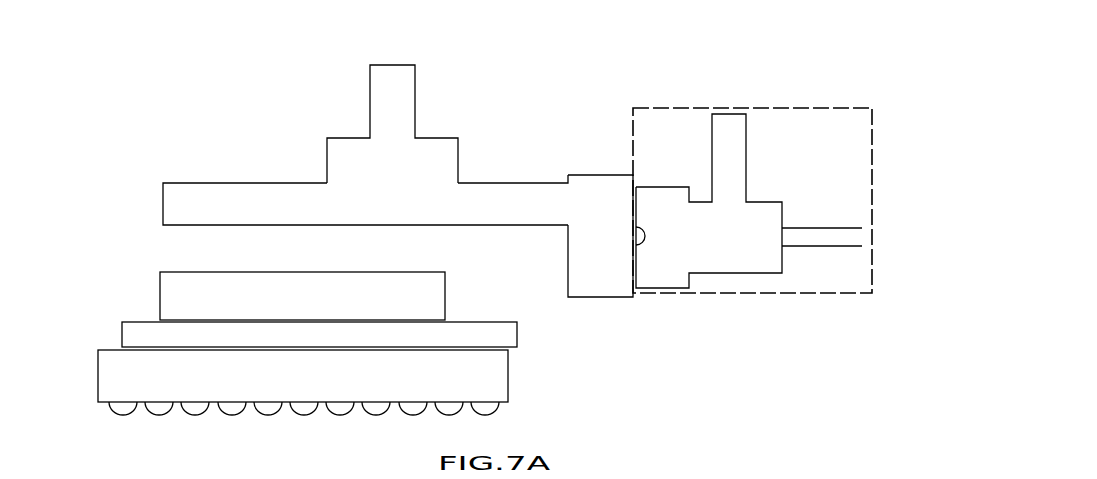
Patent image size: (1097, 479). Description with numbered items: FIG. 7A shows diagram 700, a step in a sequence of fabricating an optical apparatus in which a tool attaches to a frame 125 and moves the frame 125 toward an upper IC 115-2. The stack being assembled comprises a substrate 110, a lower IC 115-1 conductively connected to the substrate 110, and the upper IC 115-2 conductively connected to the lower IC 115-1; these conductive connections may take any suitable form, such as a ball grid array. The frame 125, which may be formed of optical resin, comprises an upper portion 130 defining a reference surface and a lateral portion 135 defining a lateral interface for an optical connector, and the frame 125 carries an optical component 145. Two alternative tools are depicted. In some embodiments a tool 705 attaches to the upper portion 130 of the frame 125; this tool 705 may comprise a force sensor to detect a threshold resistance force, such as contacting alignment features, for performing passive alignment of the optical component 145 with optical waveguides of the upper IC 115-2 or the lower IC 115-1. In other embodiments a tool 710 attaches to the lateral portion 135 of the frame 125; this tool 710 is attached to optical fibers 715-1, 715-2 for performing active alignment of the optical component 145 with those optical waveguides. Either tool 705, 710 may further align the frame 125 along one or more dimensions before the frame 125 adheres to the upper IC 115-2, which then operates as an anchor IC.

The substrate 110 is at (158, 370).
The lower IC 115-1 is at (170, 337).
The upper IC 115-2 is at (217, 285).
The frame 125 is at (137, 203).
The upper portion 130 is at (248, 182).
The lateral portion 135 is at (592, 168).
The optical component 145 is at (627, 238).
The diagram 700 is at (825, 58).
The tool 705 is at (418, 118).
The tool 710 is at (750, 147).
The optical fiber 715-1 is at (850, 223).
The optical fiber 715-2 is at (862, 239).